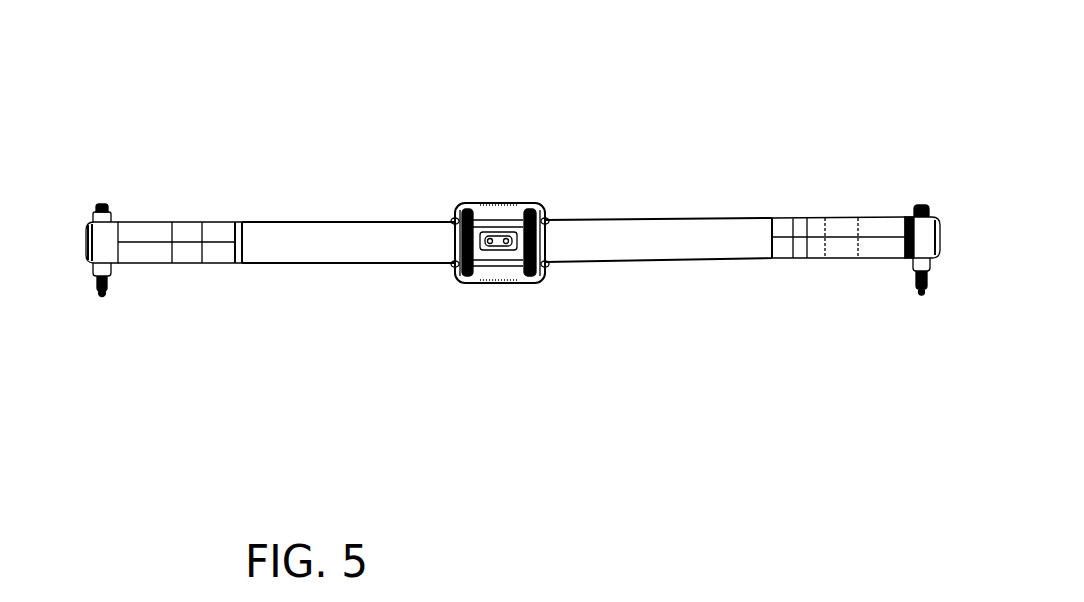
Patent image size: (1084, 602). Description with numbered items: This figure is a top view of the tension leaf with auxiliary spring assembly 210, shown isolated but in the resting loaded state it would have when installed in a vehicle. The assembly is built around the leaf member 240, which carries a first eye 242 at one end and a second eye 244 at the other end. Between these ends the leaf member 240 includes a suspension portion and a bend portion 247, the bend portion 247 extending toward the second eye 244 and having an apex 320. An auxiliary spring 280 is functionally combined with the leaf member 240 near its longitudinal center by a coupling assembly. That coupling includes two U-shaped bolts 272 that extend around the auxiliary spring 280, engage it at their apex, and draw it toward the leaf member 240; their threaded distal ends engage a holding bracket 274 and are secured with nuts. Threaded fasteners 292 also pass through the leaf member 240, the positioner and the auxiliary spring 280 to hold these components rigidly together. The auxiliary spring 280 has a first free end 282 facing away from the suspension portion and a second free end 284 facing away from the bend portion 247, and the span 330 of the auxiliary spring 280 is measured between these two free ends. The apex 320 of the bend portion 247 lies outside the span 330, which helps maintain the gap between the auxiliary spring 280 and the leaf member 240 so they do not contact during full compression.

The tension leaf with auxiliary spring assembly 210 is at (278, 408).
The span 330 is at (767, 117).
The bend portion 247 is at (903, 182).
The first eye 242 is at (101, 232).
The leaf member 240 is at (210, 232).
The first free end 282 is at (238, 248).
The auxiliary spring 280 is at (365, 238).
The threaded fasteners 292 is at (507, 210).
The holding bracket 274 is at (508, 282).
The U-shaped bolts 272 is at (540, 280).
The second free end 284 is at (772, 262).
The apex 320 is at (825, 243).
The second eye 244 is at (925, 253).